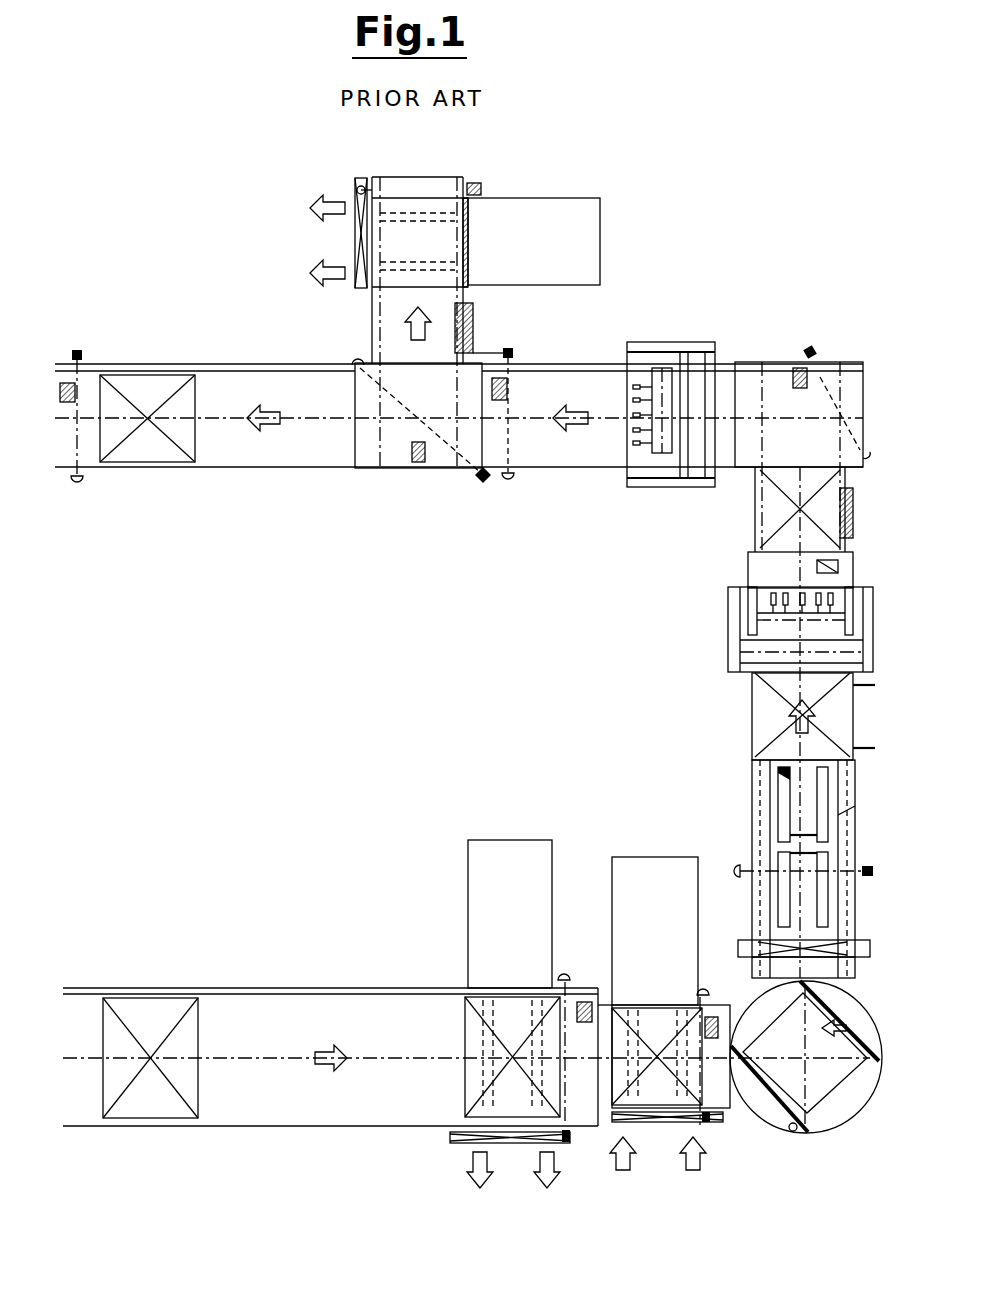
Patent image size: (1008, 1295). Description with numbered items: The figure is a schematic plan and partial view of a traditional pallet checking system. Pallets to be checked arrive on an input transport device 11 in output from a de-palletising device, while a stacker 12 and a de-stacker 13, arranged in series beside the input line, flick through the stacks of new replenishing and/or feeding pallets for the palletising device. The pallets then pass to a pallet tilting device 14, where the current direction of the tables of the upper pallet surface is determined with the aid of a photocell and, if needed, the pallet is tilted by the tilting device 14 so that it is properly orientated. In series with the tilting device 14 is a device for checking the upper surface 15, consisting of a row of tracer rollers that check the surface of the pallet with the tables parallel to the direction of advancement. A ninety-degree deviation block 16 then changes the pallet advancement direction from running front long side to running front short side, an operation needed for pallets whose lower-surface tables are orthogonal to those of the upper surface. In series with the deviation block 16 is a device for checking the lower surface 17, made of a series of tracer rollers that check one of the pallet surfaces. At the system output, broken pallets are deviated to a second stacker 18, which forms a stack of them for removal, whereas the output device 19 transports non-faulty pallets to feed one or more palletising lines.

The input transport device 11 is at (78, 1030).
The stacker 12 is at (523, 899).
The de-stacker 13 is at (643, 902).
The pallet tilting device 14 is at (762, 817).
The device for checking the upper surface 15 is at (770, 617).
The 90° deviation block 16 is at (812, 415).
The device for checking the lower surface 17 is at (680, 385).
The second stacker 18 is at (515, 257).
The output device 19 is at (148, 455).